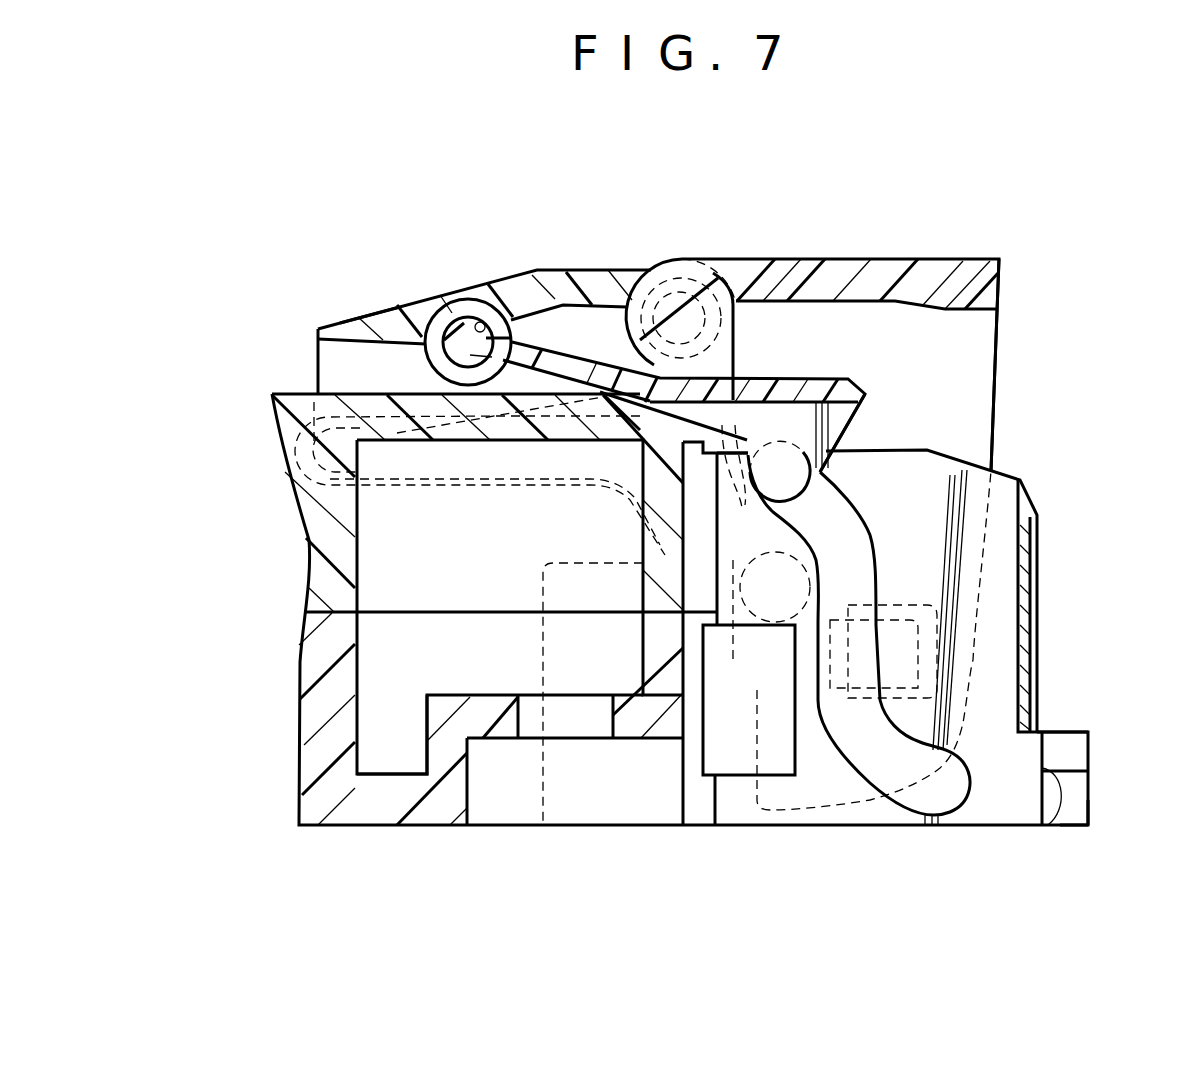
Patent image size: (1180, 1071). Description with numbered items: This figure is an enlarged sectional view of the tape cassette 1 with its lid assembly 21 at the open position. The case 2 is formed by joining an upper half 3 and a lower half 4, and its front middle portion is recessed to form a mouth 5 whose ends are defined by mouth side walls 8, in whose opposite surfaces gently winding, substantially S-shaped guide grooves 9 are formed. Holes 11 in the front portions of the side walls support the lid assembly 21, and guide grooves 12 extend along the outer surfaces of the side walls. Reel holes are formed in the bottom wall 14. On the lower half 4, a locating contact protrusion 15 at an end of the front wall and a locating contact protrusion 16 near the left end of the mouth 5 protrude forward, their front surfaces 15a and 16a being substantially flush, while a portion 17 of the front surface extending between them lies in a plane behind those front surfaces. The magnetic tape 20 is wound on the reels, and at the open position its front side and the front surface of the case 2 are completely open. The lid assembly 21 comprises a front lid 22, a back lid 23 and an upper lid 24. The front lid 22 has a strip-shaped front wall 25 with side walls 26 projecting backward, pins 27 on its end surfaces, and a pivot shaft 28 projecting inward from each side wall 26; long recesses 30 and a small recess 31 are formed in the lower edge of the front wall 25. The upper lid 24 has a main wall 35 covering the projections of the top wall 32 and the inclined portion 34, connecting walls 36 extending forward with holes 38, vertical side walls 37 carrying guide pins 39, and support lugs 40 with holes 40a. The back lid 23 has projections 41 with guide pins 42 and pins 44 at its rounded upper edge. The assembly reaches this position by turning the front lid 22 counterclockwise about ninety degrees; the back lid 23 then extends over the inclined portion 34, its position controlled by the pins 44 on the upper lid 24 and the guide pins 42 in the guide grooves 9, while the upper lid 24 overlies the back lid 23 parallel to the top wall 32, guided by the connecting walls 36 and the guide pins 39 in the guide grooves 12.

The tape cassette 1 is at (892, 170).
The case 2 is at (235, 548).
The upper half 3 is at (322, 570).
The lower half 4 is at (305, 652).
The mouth 5 is at (733, 776).
The mouth side wall 8 is at (925, 452).
The guide groove 9 is at (865, 766).
The hole 11 is at (749, 700).
The guide groove 12 is at (457, 478).
The bottom wall 14 is at (390, 778).
The locating contact protrusion 15 is at (1090, 733).
The front surface 15a is at (1090, 756).
The locating contact protrusion 16 is at (1085, 790).
The front surface 16a is at (1088, 822).
The portion of front surface 17 is at (1052, 825).
The magnetic tape 20 is at (1025, 603).
The lid assembly 21 is at (592, 184).
The front lid 22 is at (752, 259).
The back lid 23 is at (633, 259).
The upper lid 24 is at (593, 259).
The front wall 25 is at (835, 259).
The side wall 26 is at (990, 378).
The pin 27 is at (712, 328).
The pivot shaft 28 is at (800, 553).
The recess 30 is at (928, 259).
The recess 31 is at (976, 259).
The top wall 32 is at (305, 394).
The inclined portion 34 is at (736, 369).
The main wall 35 is at (387, 316).
The connecting wall 36 is at (720, 356).
The side wall 37 is at (318, 357).
The hole 38 is at (628, 447).
The guide pin 39 is at (383, 485).
The support lug 40 is at (440, 357).
The hole 40a is at (487, 312).
The projection 41 is at (843, 423).
The guide pin 42 is at (740, 545).
The pin 44 is at (462, 318).